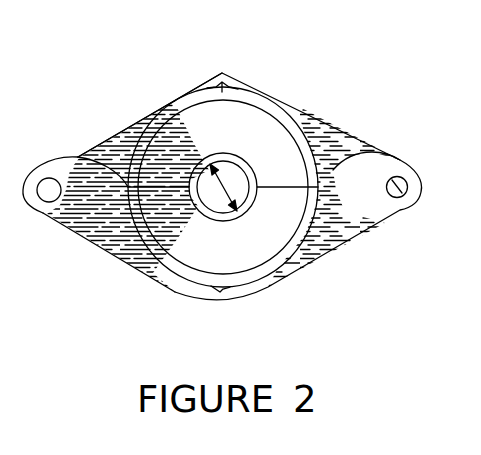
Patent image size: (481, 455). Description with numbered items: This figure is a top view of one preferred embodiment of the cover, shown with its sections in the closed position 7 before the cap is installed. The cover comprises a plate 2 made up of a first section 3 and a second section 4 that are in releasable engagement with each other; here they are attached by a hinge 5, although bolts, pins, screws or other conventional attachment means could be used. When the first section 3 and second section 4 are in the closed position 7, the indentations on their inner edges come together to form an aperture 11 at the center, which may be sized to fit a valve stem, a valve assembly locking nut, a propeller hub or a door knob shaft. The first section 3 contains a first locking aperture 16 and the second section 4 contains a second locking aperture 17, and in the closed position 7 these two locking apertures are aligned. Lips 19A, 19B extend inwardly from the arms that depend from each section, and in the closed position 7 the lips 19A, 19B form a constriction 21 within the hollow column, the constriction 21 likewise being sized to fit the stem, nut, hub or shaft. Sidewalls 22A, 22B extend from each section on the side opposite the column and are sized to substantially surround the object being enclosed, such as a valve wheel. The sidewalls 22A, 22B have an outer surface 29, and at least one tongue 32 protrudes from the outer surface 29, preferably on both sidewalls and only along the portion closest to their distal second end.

The plate 2 is at (318, 133).
The first section 3 is at (102, 230).
The second section 4 is at (102, 145).
The hinge 5 is at (402, 177).
The closed position 7 is at (396, 88).
The aperture 11 is at (200, 200).
The first locking aperture 16 is at (48, 202).
The second locking aperture 17 is at (48, 202).
The lip 19A is at (203, 215).
The lip 19B is at (210, 168).
The constriction 21 is at (234, 174).
The sidewall 22A is at (300, 235).
The sidewall 22B is at (255, 103).
The outer surface 29 is at (152, 138).
The tongue 32 is at (222, 83).